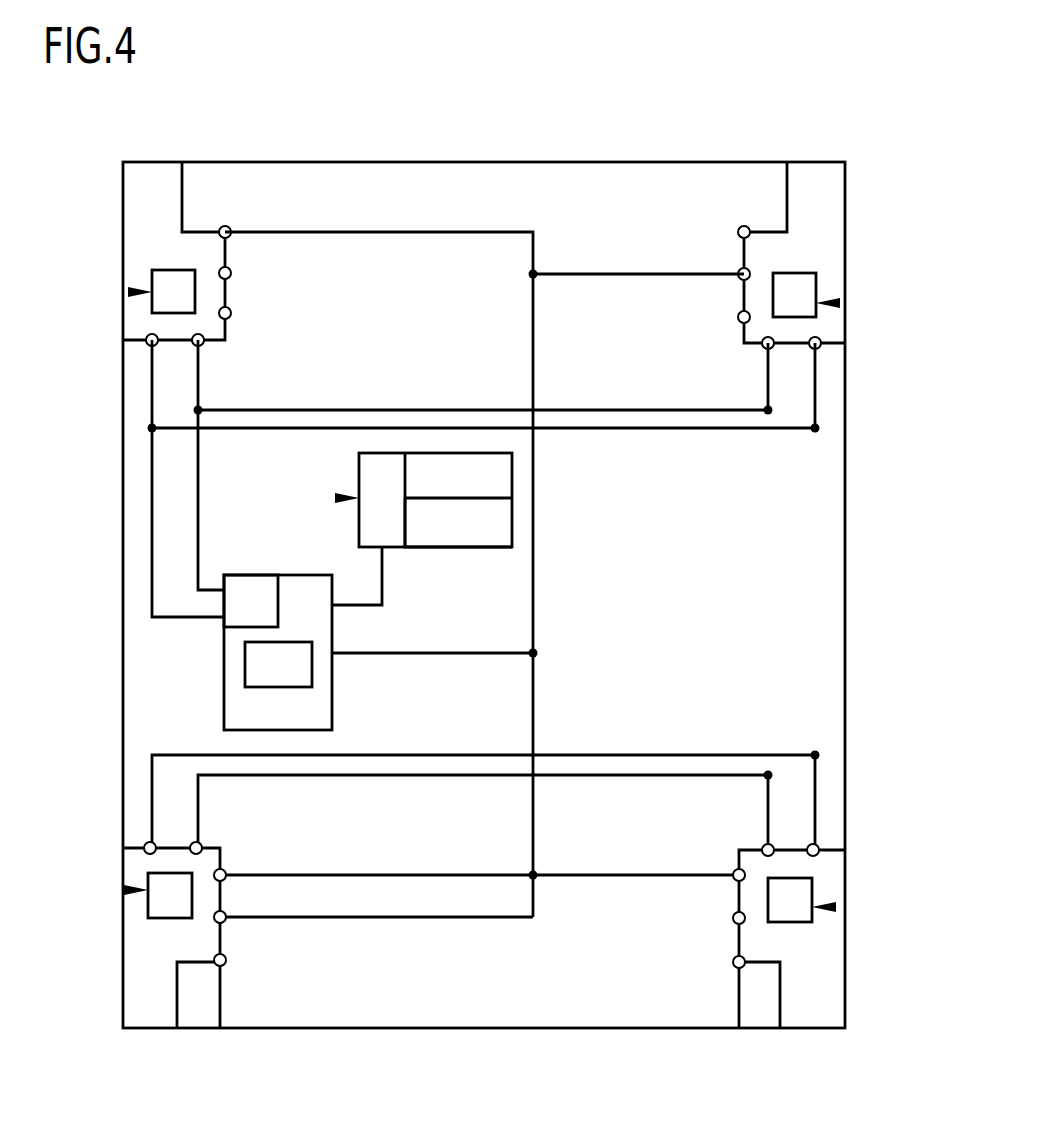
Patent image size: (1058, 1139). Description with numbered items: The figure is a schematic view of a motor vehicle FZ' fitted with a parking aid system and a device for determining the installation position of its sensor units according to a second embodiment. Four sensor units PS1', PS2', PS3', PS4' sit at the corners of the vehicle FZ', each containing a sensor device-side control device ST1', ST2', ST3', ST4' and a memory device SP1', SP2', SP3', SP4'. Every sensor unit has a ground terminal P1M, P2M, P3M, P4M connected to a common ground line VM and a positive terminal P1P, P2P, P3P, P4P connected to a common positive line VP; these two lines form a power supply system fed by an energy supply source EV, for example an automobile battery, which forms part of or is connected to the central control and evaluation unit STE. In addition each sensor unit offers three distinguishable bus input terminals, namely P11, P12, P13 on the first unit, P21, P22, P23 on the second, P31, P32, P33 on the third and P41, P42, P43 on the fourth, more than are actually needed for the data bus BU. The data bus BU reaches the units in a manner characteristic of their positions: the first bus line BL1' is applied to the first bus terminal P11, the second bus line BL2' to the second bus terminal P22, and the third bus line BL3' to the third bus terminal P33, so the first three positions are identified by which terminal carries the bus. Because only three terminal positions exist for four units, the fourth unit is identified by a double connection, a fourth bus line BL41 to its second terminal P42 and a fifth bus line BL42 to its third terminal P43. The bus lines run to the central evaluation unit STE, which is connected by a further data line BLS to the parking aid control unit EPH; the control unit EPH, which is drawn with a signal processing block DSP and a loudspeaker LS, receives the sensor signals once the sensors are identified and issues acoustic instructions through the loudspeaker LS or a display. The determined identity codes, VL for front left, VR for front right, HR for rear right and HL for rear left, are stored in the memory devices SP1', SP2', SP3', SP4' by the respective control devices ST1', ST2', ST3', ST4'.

The motor vehicle FZ' is at (484, 562).
The first sensor unit PS1' is at (164, 221).
The second sensor unit PS2' is at (834, 255).
The third sensor unit PS3' is at (832, 939).
The fourth sensor unit PS4' is at (132, 938).
The sensor device-side control device ST1' is at (211, 167).
The sensor device-side control device ST2' is at (775, 167).
The sensor device-side control device ST3' is at (752, 1032).
The sensor device-side control device ST4' is at (192, 1026).
The memory device SP1' is at (120, 268).
The memory device SP2' is at (843, 273).
The memory device SP3' is at (850, 884).
The memory device SP4' is at (118, 912).
The identity code for front left installation position VL is at (130, 292).
The identity code for front right installation position VR is at (838, 303).
The identity code for rear left installation position HL is at (126, 890).
The identity code for rear right installation position HR is at (834, 907).
The first bus terminal P11 is at (231, 232).
The input terminal P12 is at (231, 273).
The input terminal P13 is at (231, 313).
The ground terminal P1M is at (147, 343).
The positive terminal P1P is at (203, 344).
The input terminal P21 is at (739, 229).
The second bus terminal P22 is at (738, 274).
The input terminal P23 is at (738, 317).
The positive terminal P2P is at (766, 350).
The ground terminal P2M is at (820, 347).
The input terminal P31 is at (733, 964).
The input terminal P32 is at (733, 920).
The third bus terminal P33 is at (733, 875).
The positive terminal P3P is at (762, 847).
The ground terminal P3M is at (818, 847).
The input terminal P41 is at (226, 962).
The second bus terminal P42 is at (226, 919).
The third bus terminal P43 is at (226, 873).
The positive terminal P4P is at (199, 844).
The ground terminal P4M is at (145, 846).
The first bus line BL1' is at (379, 574).
The second bus line BL2' is at (637, 240).
The third bus line BL3' is at (634, 912).
The fourth bus line BL41 is at (418, 920).
The fifth bus line BL42 is at (412, 872).
The positive line VP is at (202, 452).
The ground line VM is at (148, 512).
The parking aid system control unit EPH is at (337, 498).
The digital signal processor DSP is at (458, 480).
The loudspeaker LS is at (458, 522).
The headphone bus line BLS is at (386, 576).
The evaluation device STE is at (278, 652).
The energy supply source EV is at (251, 601).
The data bus BU is at (533, 627).